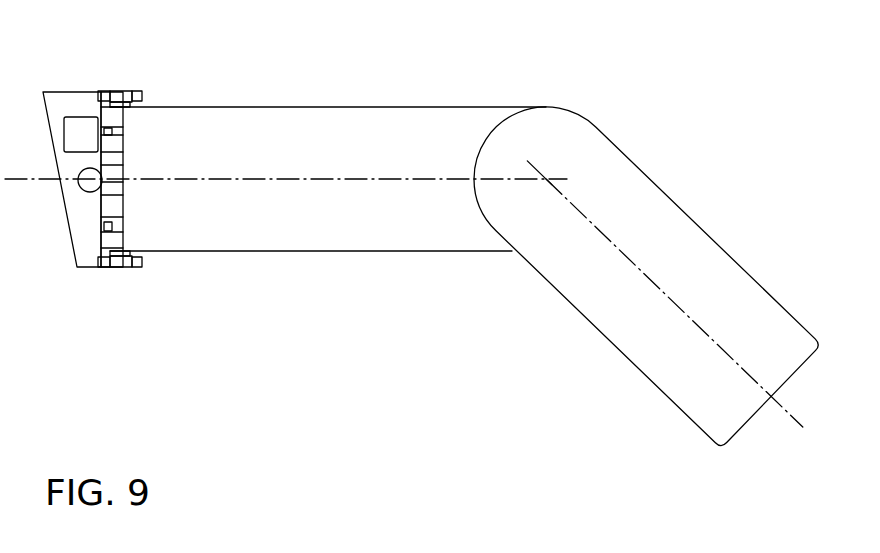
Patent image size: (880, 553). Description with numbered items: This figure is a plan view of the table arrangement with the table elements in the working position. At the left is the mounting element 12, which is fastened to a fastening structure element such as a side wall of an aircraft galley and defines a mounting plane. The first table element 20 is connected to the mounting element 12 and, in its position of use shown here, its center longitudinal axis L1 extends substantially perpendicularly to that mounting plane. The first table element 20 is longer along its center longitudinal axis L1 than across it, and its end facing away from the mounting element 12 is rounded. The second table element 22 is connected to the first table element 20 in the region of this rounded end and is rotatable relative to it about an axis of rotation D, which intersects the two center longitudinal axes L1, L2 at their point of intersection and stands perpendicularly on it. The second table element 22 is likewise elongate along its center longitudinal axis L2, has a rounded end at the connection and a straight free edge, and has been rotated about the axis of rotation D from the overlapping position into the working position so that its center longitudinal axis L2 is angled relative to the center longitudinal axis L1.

The mounting element 12 is at (72, 100).
The first table element 20 is at (358, 112).
The second table element 22 is at (696, 229).
The axis of rotation D is at (545, 178).
The center longitudinal axis of the first table element L1 is at (24, 181).
The center longitudinal axis of the second table element L2 is at (790, 415).